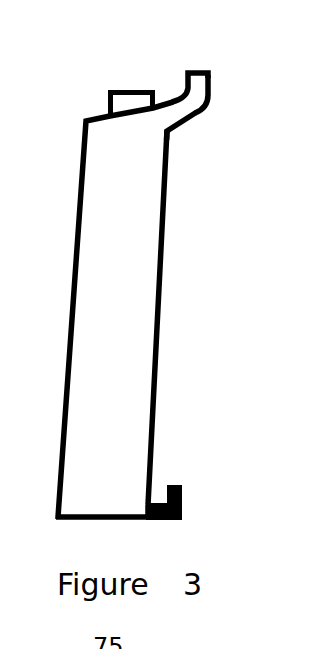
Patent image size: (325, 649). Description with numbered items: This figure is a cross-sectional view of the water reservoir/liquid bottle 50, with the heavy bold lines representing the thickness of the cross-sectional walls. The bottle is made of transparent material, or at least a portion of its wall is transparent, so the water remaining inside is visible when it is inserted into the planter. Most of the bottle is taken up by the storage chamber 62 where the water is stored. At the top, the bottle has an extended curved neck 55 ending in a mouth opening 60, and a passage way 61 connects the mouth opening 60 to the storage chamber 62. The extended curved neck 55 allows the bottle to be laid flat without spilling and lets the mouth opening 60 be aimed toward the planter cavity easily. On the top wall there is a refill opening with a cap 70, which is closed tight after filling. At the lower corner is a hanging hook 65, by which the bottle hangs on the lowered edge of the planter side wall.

The water reservoir/liquid bottle 50 is at (76, 85).
The extended curved neck 55 is at (205, 90).
The mouth opening 60 is at (198, 72).
The passage way 61 is at (190, 123).
The storage chamber 62 is at (122, 293).
The hanging hook 65 is at (180, 488).
The refill opening with cap 70 is at (127, 90).